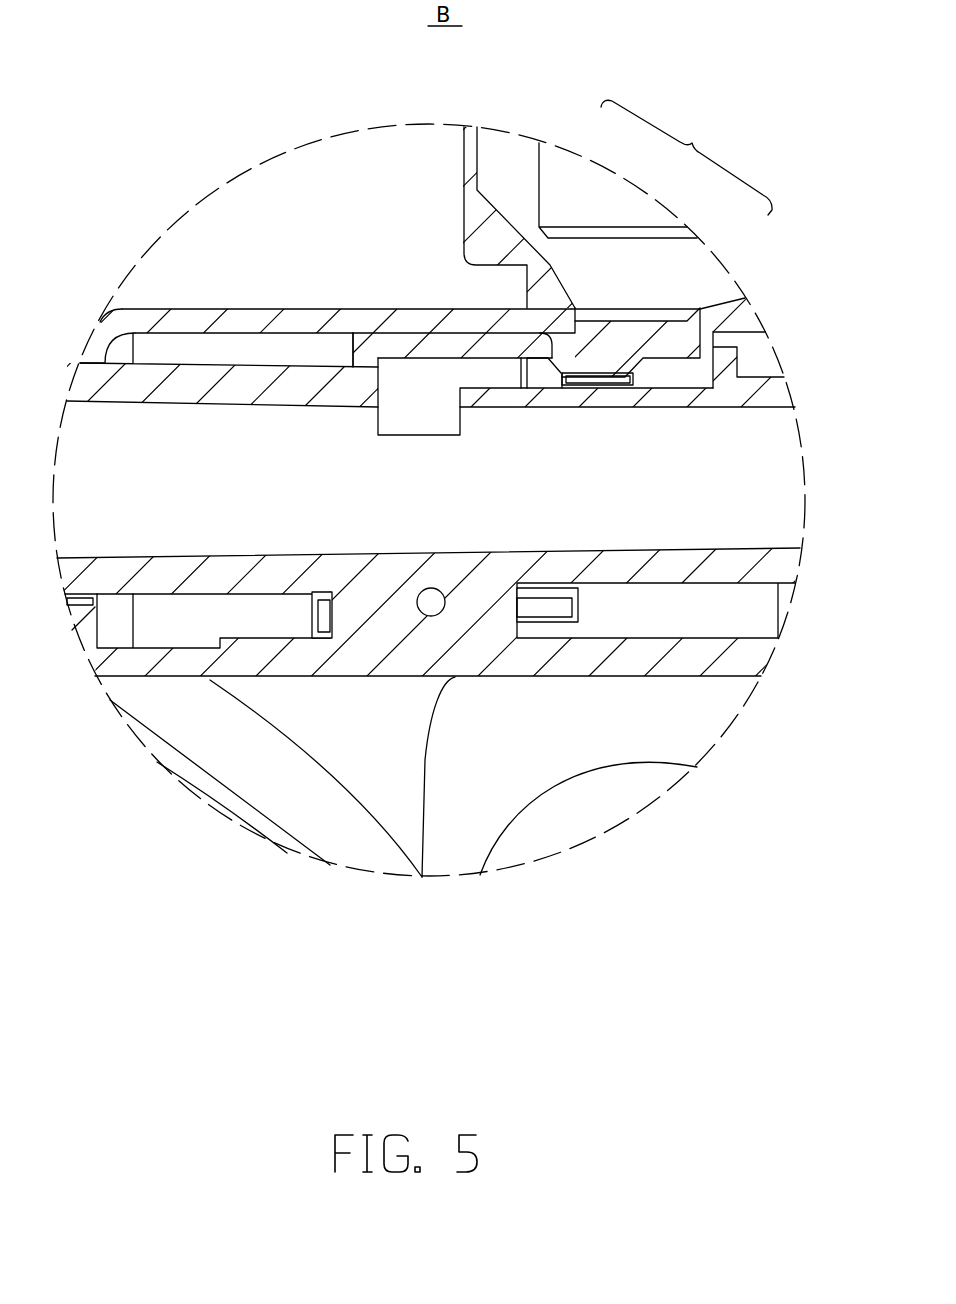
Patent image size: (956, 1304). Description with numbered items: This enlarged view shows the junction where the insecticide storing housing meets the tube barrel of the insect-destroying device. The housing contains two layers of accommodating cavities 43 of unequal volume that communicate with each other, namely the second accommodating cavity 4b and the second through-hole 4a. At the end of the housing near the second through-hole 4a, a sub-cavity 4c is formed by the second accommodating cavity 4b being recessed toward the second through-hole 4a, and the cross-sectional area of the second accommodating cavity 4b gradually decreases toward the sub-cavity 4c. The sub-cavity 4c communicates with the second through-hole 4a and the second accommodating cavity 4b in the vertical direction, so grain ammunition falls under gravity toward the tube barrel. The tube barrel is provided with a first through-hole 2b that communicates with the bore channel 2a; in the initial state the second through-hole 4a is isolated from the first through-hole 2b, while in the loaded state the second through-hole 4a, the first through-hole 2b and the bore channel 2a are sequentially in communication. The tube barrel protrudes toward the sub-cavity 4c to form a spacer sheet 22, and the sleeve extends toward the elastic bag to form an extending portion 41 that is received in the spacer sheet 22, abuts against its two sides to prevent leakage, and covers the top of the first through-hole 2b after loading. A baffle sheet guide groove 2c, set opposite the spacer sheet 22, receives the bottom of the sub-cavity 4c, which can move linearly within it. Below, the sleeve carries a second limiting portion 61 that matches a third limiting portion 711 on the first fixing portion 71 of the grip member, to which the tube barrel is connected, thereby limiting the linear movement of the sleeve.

The bore channel 2a is at (127, 440).
The first through-hole 2b is at (415, 427).
The baffle sheet guide groove 2c is at (712, 388).
The spacer sheet 22 is at (378, 358).
The extending portion 41 is at (453, 378).
The two layers of accommodating cavities 43 is at (686, 157).
The second through-hole 4a is at (600, 380).
The second accommodating cavity 4b is at (575, 183).
The sub-cavity 4c is at (662, 342).
The second limiting portion 61 is at (580, 622).
The first fixing portion 71 is at (422, 877).
The third limiting portion 711 is at (322, 640).